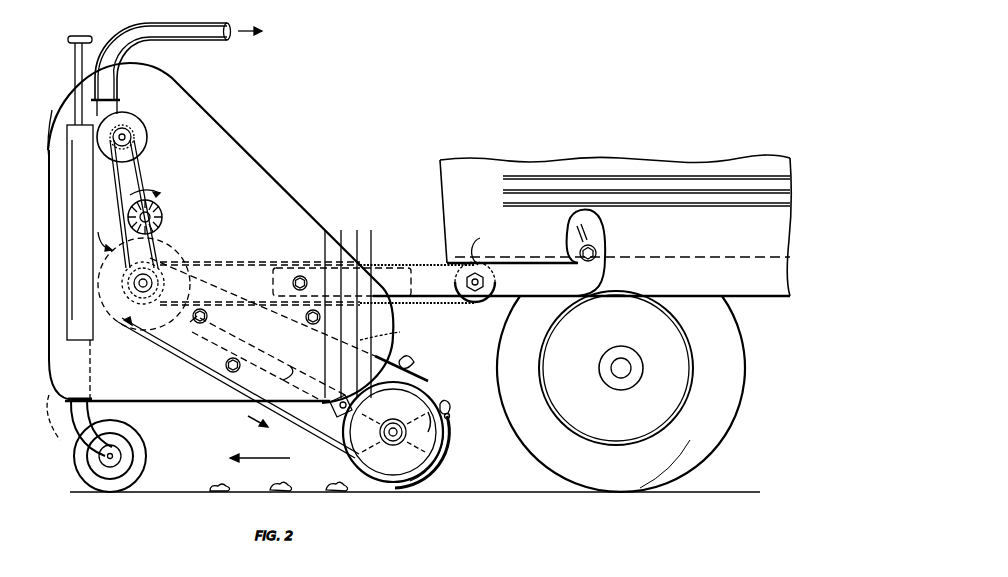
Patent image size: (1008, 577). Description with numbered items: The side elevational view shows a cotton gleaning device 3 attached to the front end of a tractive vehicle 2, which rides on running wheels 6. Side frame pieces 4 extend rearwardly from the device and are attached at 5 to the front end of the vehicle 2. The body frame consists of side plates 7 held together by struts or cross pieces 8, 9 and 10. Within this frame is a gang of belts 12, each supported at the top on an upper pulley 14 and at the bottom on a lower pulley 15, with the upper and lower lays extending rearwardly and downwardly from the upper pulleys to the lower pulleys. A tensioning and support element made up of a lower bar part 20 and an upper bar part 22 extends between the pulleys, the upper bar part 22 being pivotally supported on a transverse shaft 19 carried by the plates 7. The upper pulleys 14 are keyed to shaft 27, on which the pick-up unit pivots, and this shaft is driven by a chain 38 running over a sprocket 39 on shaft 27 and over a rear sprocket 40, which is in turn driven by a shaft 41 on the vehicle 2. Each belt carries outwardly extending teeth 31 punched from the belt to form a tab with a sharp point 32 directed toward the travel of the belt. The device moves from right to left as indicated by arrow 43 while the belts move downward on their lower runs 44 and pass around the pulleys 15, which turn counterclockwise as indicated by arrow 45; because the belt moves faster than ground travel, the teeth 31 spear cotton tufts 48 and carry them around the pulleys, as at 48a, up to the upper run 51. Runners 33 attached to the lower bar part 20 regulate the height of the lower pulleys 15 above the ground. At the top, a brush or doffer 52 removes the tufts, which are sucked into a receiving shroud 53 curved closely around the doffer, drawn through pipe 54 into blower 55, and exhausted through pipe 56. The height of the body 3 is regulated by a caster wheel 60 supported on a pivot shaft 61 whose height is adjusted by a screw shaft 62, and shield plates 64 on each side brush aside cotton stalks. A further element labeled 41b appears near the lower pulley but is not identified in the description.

The tractive vehicle 2 is at (550, 161).
The gleaning device 3 is at (170, 405).
The side frame piece 4 is at (488, 296).
The attachment point 5 is at (468, 302).
The running wheel 6 is at (742, 358).
The side plate 7 is at (262, 170).
The strut 8 is at (52, 115).
The strut 9 is at (306, 320).
The strut 10 is at (226, 362).
The gang of belts 12 is at (286, 436).
The upper pulley 14 is at (109, 240).
The lower pulley 15 is at (397, 430).
The transverse shaft 19 is at (208, 317).
The lower bar part 20 is at (302, 384).
The upper bar part 22 is at (192, 322).
The shaft 27 is at (147, 300).
The teeth 31 is at (450, 443).
The sharp point 32 is at (446, 461).
The runner 33 is at (374, 486).
The chain 38 is at (372, 264).
The sprocket 39 is at (165, 266).
The sprocket 40 is at (474, 262).
The shaft 41 is at (480, 304).
The link 41b is at (378, 380).
The arrow 43 is at (270, 459).
The lower run 44 is at (252, 403).
The arrow 45 is at (431, 423).
The cotton tuft 48 is at (330, 490).
The cotton tuft 48a is at (450, 403).
The upper run 51 is at (392, 334).
The brush 52 is at (162, 212).
The receiving shroud 53 is at (94, 222).
The pipe 54 is at (112, 180).
The blower 55 is at (132, 116).
The pipe 56 is at (176, 26).
The caster wheel 60 is at (146, 468).
The pivot shaft 61 is at (58, 417).
The screw shaft 62 is at (66, 42).
The shield plate 64 is at (333, 250).